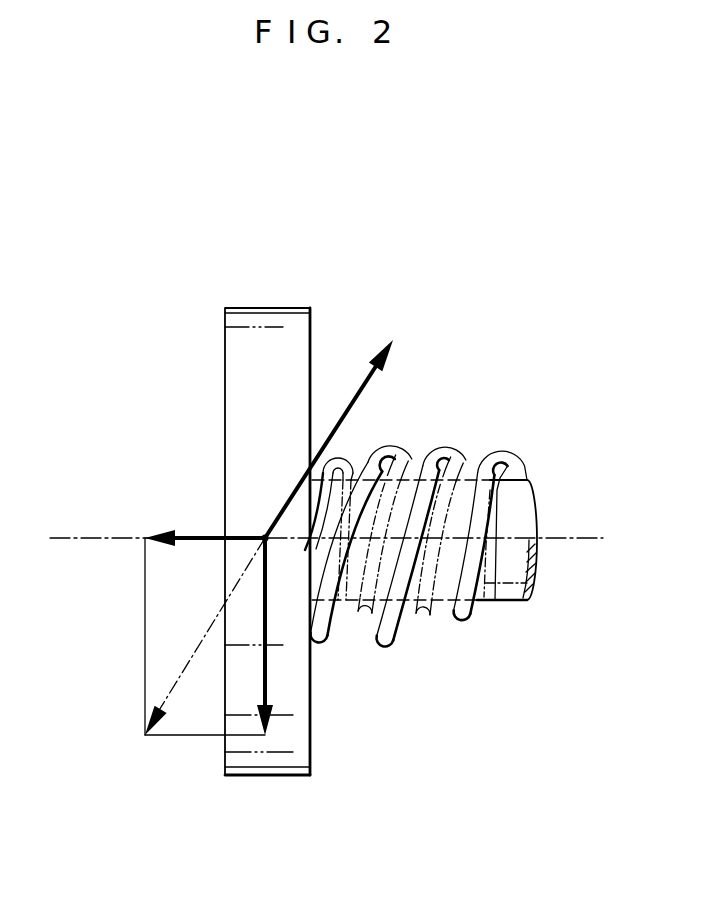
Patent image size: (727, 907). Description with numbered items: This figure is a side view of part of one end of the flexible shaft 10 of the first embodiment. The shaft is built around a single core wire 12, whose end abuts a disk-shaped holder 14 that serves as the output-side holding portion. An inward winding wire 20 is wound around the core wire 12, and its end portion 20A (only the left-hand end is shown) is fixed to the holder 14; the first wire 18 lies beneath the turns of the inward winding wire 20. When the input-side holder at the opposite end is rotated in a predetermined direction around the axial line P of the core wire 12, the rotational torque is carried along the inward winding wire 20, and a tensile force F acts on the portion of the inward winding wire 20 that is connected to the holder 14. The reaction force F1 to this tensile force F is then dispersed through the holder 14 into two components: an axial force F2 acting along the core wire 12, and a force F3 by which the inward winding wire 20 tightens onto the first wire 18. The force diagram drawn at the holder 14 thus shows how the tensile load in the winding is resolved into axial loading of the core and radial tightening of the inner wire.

The flexible shaft 10 is at (475, 356).
The core wire 12 is at (493, 602).
The holder 14 is at (275, 327).
The first wire 18 is at (413, 538).
The inward winding wire 20 is at (505, 437).
The end portion 20A is at (308, 552).
The axial line P is at (570, 542).
The tensile force F is at (380, 395).
The reaction force F1 is at (197, 652).
The axial force F2 is at (193, 534).
The force F3 is at (268, 685).